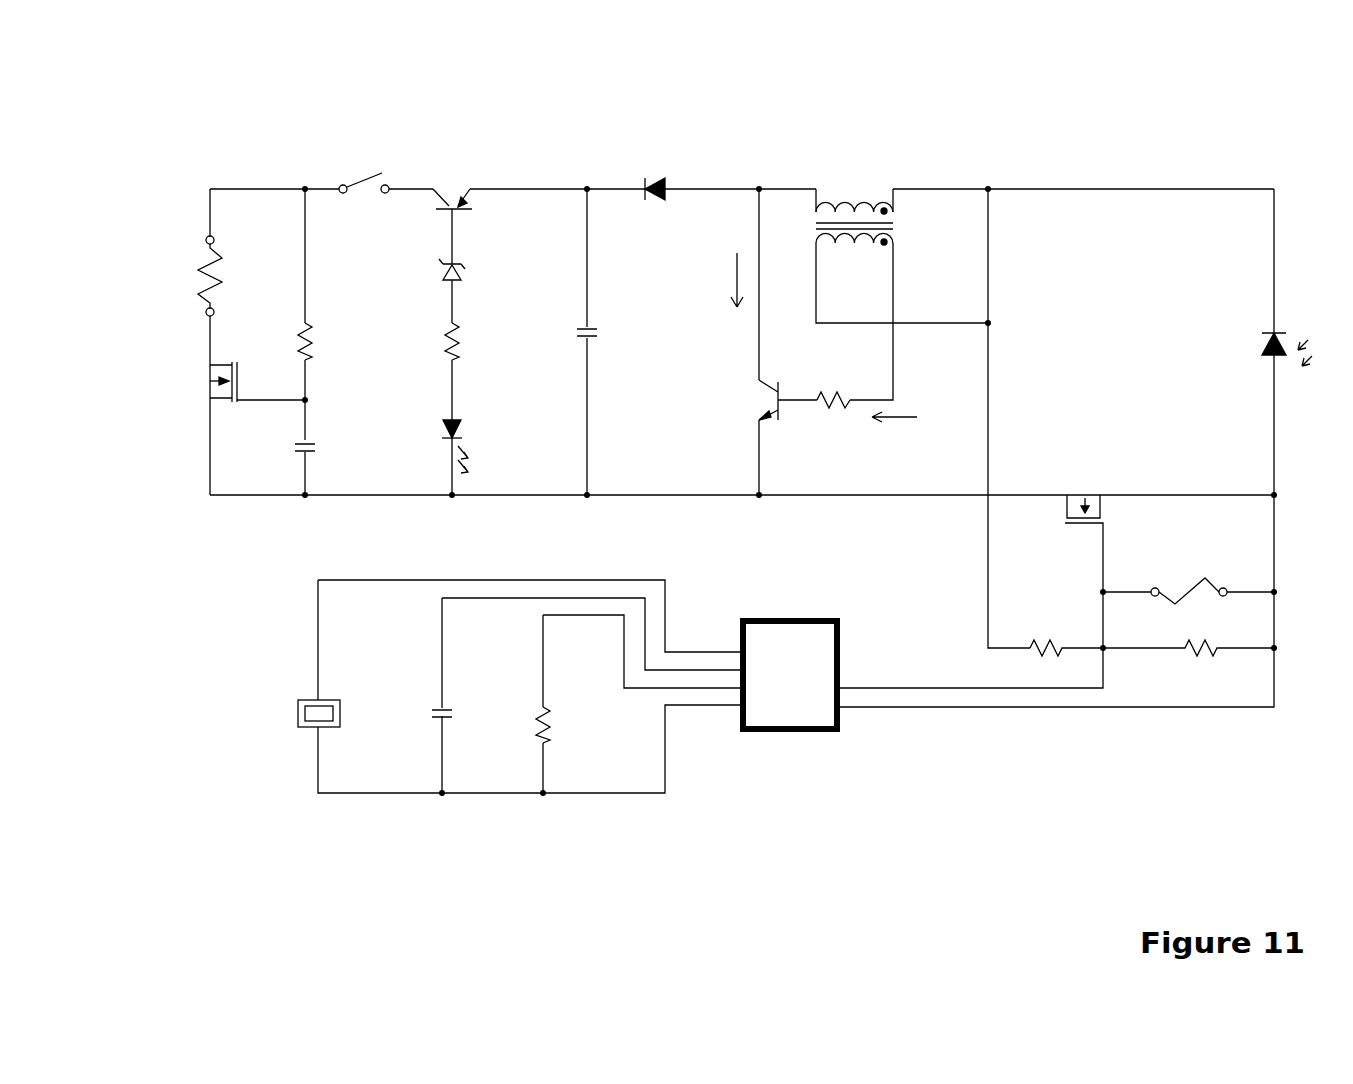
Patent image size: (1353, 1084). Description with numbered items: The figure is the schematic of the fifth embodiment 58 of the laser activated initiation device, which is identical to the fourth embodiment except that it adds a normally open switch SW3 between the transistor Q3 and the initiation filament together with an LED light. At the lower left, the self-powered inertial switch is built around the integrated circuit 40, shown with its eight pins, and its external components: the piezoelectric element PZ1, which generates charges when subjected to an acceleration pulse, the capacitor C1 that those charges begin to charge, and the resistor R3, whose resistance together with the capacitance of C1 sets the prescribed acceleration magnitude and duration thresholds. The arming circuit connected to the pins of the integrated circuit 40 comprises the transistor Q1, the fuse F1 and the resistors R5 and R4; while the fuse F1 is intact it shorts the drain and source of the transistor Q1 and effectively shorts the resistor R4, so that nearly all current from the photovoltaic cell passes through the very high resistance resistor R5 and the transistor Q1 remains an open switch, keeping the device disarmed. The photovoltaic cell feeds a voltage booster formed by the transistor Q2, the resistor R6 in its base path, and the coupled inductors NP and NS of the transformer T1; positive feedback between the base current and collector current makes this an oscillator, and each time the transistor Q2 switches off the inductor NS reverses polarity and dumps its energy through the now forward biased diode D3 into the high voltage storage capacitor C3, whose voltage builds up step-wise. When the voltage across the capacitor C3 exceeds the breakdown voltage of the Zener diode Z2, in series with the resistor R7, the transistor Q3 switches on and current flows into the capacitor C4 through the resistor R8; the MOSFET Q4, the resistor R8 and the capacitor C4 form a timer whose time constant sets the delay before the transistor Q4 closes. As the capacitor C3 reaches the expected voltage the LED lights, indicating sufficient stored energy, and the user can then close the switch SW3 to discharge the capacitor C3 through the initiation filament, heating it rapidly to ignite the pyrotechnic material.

The fifth embodiment of laser activated initiation device 58 is at (1168, 122).
The integrated circuit 40 is at (784, 612).
The normally open switch SW3 is at (362, 167).
The transistor Q4 is at (225, 382).
The resistor R8 is at (328, 341).
The capacitor C4 is at (326, 447).
The transistor Q3 is at (452, 173).
The Zener diode Z2 is at (475, 274).
The resistor R7 is at (478, 341).
The LED light LED is at (483, 444).
The high voltage electrical energy storage capacitor C3 is at (611, 335).
The diode D3 is at (652, 168).
The transistor Q2 is at (742, 400).
The transformer T1 is at (854, 206).
The resistor R6 is at (836, 422).
The transistor Q1 is at (1082, 522).
The fuse F1 is at (1188, 575).
The resistor R5 is at (1065, 635).
The resistor R4 is at (1188, 635).
The piezoelectric element PZ1 is at (344, 713).
The capacitor C1 is at (464, 716).
The resistor R3 is at (566, 725).